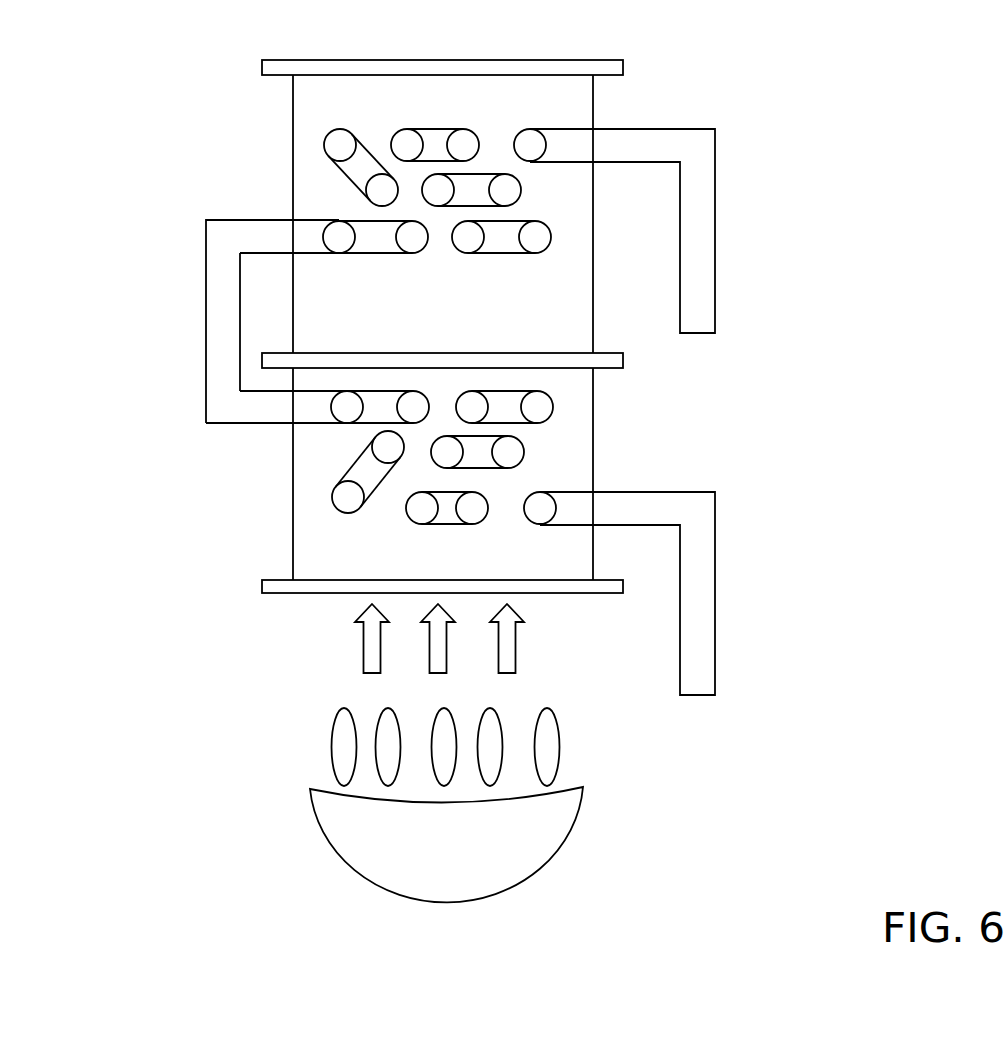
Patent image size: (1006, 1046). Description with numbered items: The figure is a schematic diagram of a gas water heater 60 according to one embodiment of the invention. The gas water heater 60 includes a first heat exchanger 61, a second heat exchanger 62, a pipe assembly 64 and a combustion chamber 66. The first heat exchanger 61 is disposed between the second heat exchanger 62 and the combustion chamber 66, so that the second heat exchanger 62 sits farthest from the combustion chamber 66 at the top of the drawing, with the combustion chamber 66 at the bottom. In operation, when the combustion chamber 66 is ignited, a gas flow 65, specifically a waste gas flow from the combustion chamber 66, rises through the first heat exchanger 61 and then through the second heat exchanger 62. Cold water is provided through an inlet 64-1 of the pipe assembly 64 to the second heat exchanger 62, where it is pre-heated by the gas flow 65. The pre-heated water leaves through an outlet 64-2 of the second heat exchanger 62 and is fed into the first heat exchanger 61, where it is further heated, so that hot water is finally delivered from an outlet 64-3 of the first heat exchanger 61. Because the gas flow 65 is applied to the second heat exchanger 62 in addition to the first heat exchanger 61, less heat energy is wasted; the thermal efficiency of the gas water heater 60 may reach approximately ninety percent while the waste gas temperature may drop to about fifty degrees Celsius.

The gas water heater 60 is at (903, 132).
The first heat exchanger 61 is at (298, 447).
The second heat exchanger 62 is at (295, 152).
The pipe assembly 64 is at (500, 253).
The inlet 64-1 is at (704, 352).
The outlet of the second heat exchanger 64-2 is at (343, 222).
The outlet of the first heat exchanger 64-3 is at (698, 702).
The gas flow 65 is at (512, 638).
The combustion chamber 66 is at (548, 867).